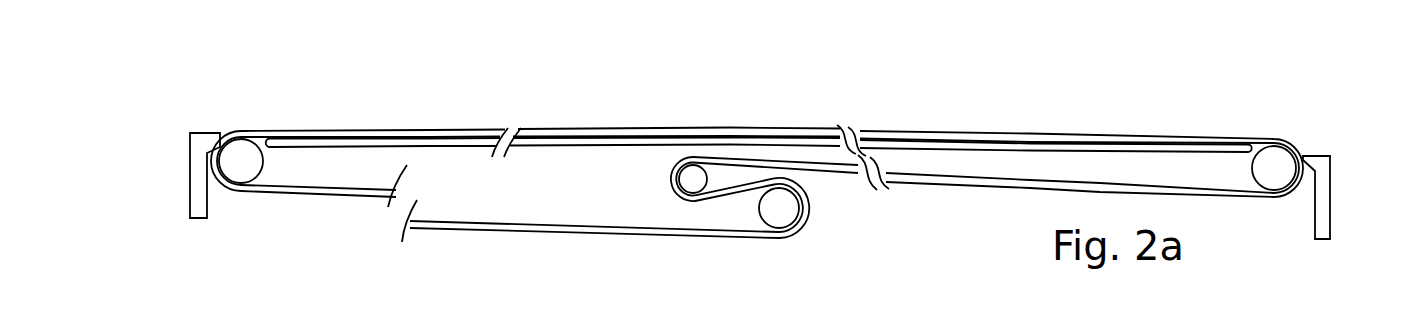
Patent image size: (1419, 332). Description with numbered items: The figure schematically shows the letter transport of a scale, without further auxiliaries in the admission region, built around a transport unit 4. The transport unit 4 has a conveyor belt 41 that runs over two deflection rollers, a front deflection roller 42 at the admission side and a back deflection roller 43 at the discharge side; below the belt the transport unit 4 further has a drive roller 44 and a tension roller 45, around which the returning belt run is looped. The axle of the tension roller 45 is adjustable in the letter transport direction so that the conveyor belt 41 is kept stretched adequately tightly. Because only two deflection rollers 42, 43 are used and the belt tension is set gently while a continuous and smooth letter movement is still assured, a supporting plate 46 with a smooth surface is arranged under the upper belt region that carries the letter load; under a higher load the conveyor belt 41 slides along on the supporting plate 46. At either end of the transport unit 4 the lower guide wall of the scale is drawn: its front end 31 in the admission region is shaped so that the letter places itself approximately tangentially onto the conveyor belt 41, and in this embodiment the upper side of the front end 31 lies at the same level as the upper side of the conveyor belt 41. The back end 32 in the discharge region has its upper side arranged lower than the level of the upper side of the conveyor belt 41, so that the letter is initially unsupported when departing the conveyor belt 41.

The transport unit 4 is at (492, 127).
The front end of the lower guide wall 31 is at (192, 170).
The back end of the lower guide wall 32 is at (1328, 178).
The conveyor belt 41 is at (432, 130).
The front deflection roller 42 is at (232, 162).
The back deflection roller 43 is at (1265, 150).
The drive roller 44 is at (693, 179).
The tension roller 45 is at (779, 208).
The supporting plate 46 is at (961, 148).